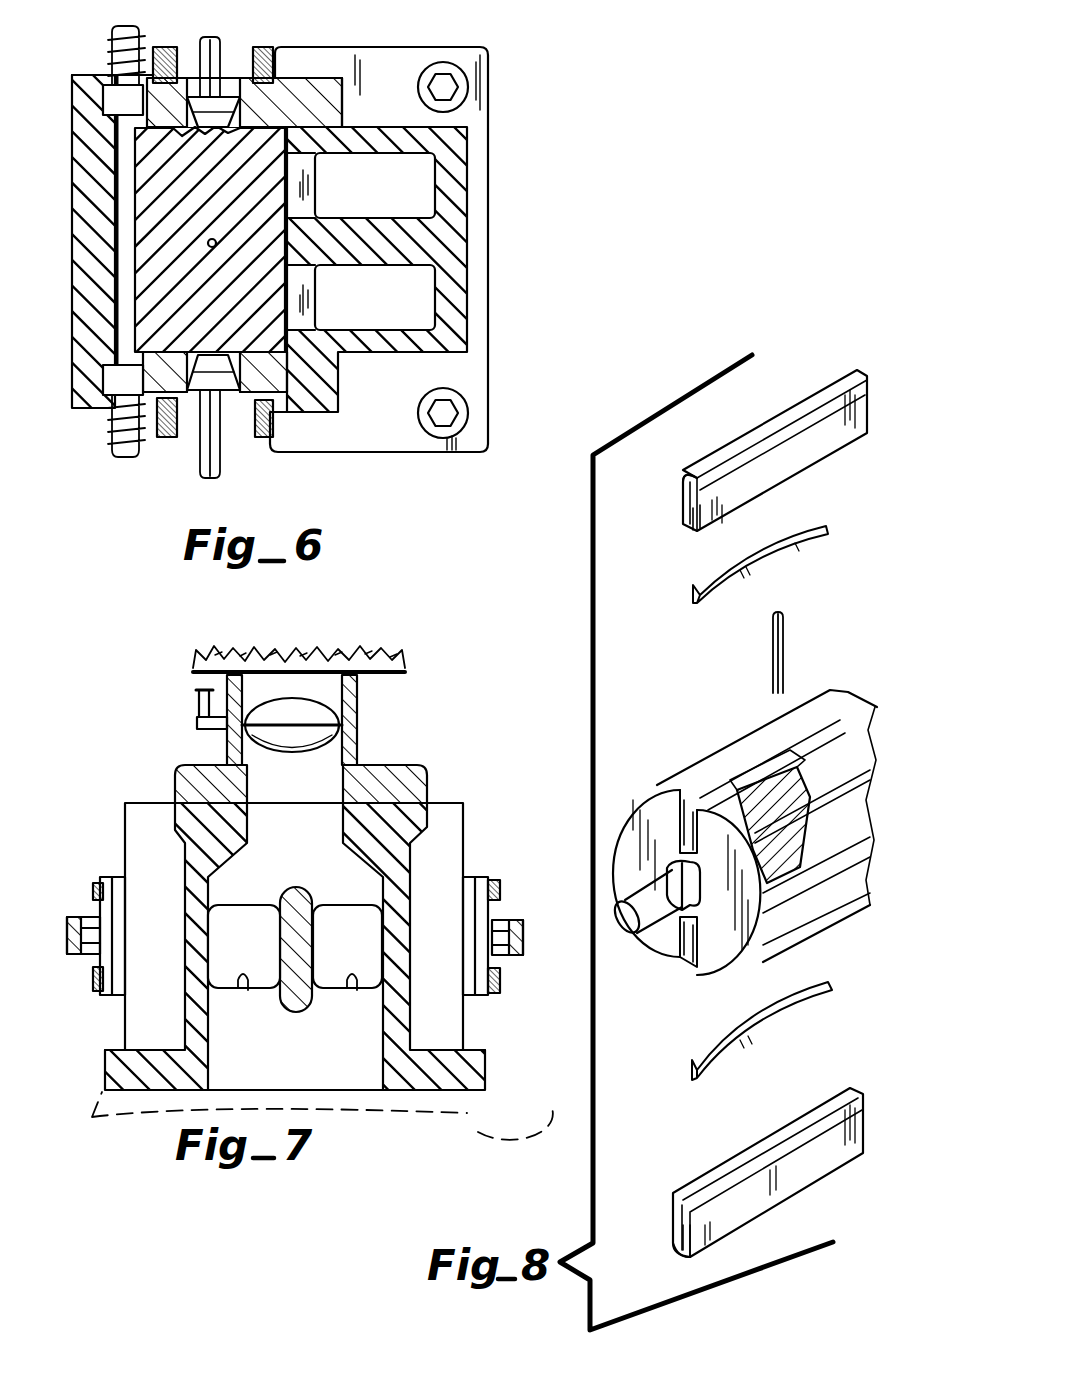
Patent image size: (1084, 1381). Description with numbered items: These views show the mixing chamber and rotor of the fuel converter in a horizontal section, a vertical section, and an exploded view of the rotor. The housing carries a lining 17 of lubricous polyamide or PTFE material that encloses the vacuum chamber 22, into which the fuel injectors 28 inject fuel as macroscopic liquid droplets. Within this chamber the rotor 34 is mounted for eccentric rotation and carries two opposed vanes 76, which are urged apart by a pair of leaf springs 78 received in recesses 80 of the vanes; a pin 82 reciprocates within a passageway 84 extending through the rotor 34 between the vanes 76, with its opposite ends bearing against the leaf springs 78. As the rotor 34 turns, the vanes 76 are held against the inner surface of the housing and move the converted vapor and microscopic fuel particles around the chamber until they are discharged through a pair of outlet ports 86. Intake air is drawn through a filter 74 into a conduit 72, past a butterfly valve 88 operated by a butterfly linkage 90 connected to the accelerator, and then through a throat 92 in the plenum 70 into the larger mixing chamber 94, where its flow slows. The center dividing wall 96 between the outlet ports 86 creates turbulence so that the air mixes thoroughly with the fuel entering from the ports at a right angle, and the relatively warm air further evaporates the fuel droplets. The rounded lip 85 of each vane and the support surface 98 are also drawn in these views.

In FIG. 6, the lining 17 is at (275, 128).
In FIG. 6, the vacuum chamber 22 is at (123, 275).
In FIG. 6, the fuel injectors 28 is at (110, 55).
In FIG. 6, the rotor 34 is at (152, 198).
In FIG. 8, the rotor 34 is at (680, 768).
In FIG. 7, the plenum 70 is at (432, 895).
In FIG. 7, the conduit 72 is at (357, 707).
In FIG. 7, the filter 74 is at (363, 660).
In FIG. 8, the vanes 76 is at (762, 452).
In FIG. 8, the leaf springs 78 is at (695, 606).
In FIG. 8, the recesses 80 is at (687, 527).
In FIG. 6, the pin 82 is at (216, 246).
In FIG. 8, the pin 82 is at (785, 640).
In FIG. 8, the passageway 84 is at (777, 800).
In FIG. 8, the rounded lip 85 is at (680, 440).
In FIG. 6, the outlet ports 86 is at (308, 183).
In FIG. 7, the outlet ports 86 is at (240, 990).
In FIG. 7, the butterfly valve 88 is at (287, 698).
In FIG. 7, the butterfly linkage 90 is at (197, 700).
In FIG. 7, the throat 92 is at (345, 793).
In FIG. 6, the mixing chamber 94 is at (420, 182).
In FIG. 7, the mixing chamber 94 is at (382, 1075).
In FIG. 6, the center dividing wall 96 is at (415, 243).
In FIG. 7, the center dividing wall 96 is at (293, 887).
In FIG. 7, the support surface 98 is at (553, 1108).